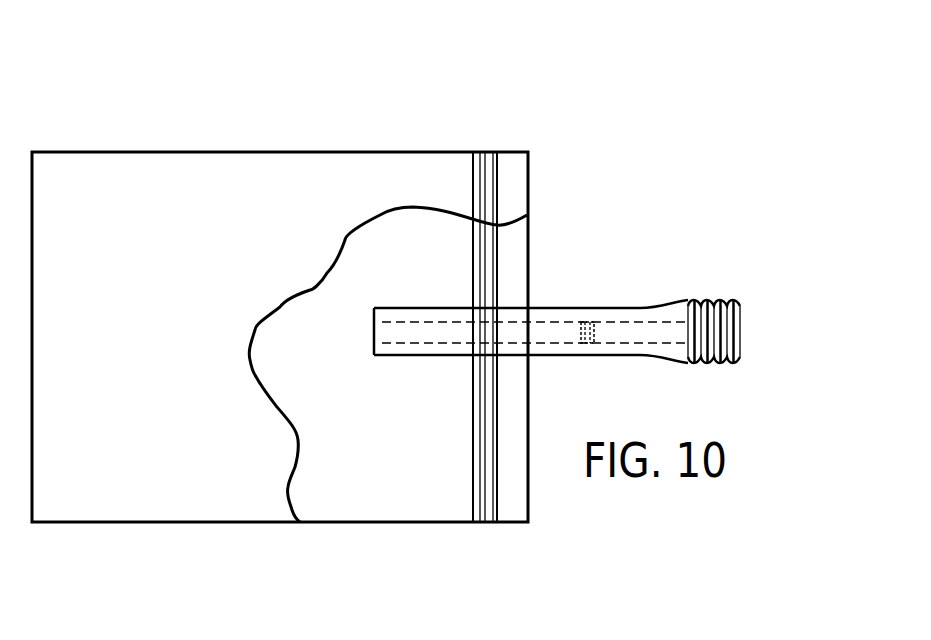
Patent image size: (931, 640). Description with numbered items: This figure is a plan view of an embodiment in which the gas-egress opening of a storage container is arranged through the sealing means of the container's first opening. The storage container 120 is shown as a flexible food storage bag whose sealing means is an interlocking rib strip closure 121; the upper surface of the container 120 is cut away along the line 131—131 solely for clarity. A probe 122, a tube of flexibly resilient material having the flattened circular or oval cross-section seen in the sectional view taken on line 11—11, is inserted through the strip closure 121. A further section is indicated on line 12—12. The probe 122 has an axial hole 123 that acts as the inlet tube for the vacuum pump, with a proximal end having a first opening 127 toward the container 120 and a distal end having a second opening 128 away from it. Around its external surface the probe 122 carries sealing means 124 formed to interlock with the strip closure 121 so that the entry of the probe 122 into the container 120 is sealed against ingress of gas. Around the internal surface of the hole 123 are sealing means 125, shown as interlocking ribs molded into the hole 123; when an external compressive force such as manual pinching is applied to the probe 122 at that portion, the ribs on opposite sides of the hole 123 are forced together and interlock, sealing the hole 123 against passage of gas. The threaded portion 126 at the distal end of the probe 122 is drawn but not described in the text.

The section line 11- 11 is at (487, 607).
The section line 12- 12 is at (323, 332).
The storage container 120 is at (80, 172).
The interlocking rib strip closure 121 is at (500, 155).
The probe 122 is at (560, 318).
The axial hole 123 is at (397, 343).
The external sealing means 124 is at (472, 307).
The internal sealing means 125 is at (587, 343).
The threaded portion 126 is at (713, 302).
The first opening 127 is at (374, 325).
The second opening 128 is at (740, 322).
The cut-away line 131- 131 is at (411, 375).